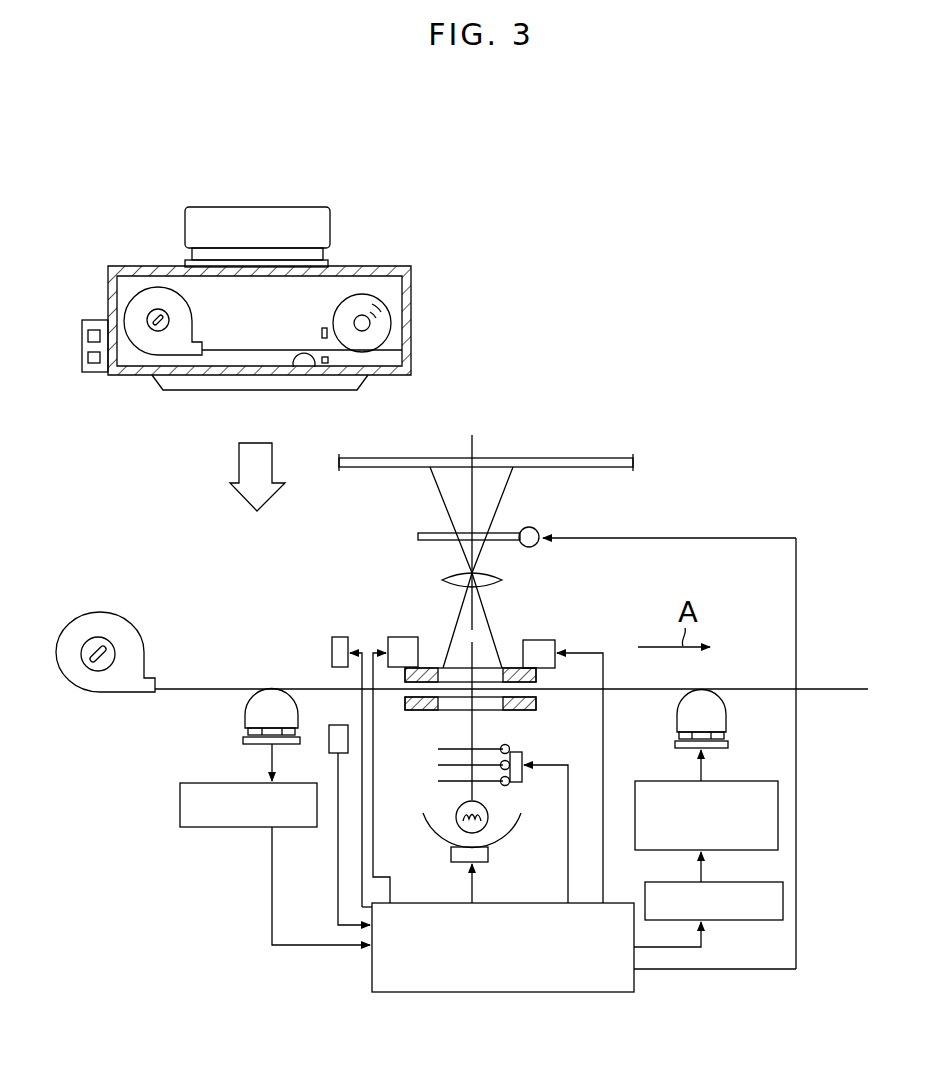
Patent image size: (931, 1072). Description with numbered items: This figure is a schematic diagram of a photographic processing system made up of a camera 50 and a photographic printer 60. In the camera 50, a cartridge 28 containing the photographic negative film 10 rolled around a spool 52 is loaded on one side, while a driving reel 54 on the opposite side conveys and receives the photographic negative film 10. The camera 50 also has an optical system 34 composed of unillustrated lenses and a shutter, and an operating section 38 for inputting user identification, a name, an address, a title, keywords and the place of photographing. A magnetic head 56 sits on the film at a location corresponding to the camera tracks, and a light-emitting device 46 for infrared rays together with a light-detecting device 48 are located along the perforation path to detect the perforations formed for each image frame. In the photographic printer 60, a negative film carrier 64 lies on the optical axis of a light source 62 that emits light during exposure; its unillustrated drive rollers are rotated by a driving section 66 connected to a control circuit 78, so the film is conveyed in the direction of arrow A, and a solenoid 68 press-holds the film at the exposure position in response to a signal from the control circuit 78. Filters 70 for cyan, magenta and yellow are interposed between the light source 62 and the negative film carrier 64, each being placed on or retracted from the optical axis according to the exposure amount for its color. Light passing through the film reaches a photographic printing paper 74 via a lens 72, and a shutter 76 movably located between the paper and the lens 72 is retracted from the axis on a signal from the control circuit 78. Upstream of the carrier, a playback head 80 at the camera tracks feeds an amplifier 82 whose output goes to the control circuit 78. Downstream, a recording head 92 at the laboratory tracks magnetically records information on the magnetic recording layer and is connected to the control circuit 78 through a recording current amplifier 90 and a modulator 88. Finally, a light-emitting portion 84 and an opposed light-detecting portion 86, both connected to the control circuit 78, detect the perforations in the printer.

The photographic negative film 10 is at (267, 348).
The cartridge 28 is at (160, 286).
The optical system 34 is at (280, 207).
The operating section 38 is at (82, 332).
The light-emitting device 46 is at (323, 330).
The light-detecting device 48 is at (328, 362).
The camera 50 is at (428, 310).
The spool 52 is at (148, 313).
The driving reel 54 is at (366, 314).
The magnetic head 56 is at (303, 372).
The photographic printer 60 is at (824, 593).
The light source 62 is at (520, 816).
The negative film carrier 64 is at (515, 661).
The driving section 66 is at (402, 637).
The solenoid 68 is at (555, 640).
The filters 70 is at (524, 753).
The lens 72 is at (505, 580).
The photographic printing paper 74 is at (581, 458).
The shutter 76 is at (531, 527).
The control circuit 78 is at (378, 992).
The playback head 80 is at (245, 718).
The amplifier 82 is at (215, 827).
The light-emitting portion 84 is at (340, 636).
The light-detecting portion 86 is at (338, 716).
The modulator 88 is at (728, 920).
The recording current amplifier 90 is at (672, 781).
The recording head 92 is at (727, 724).